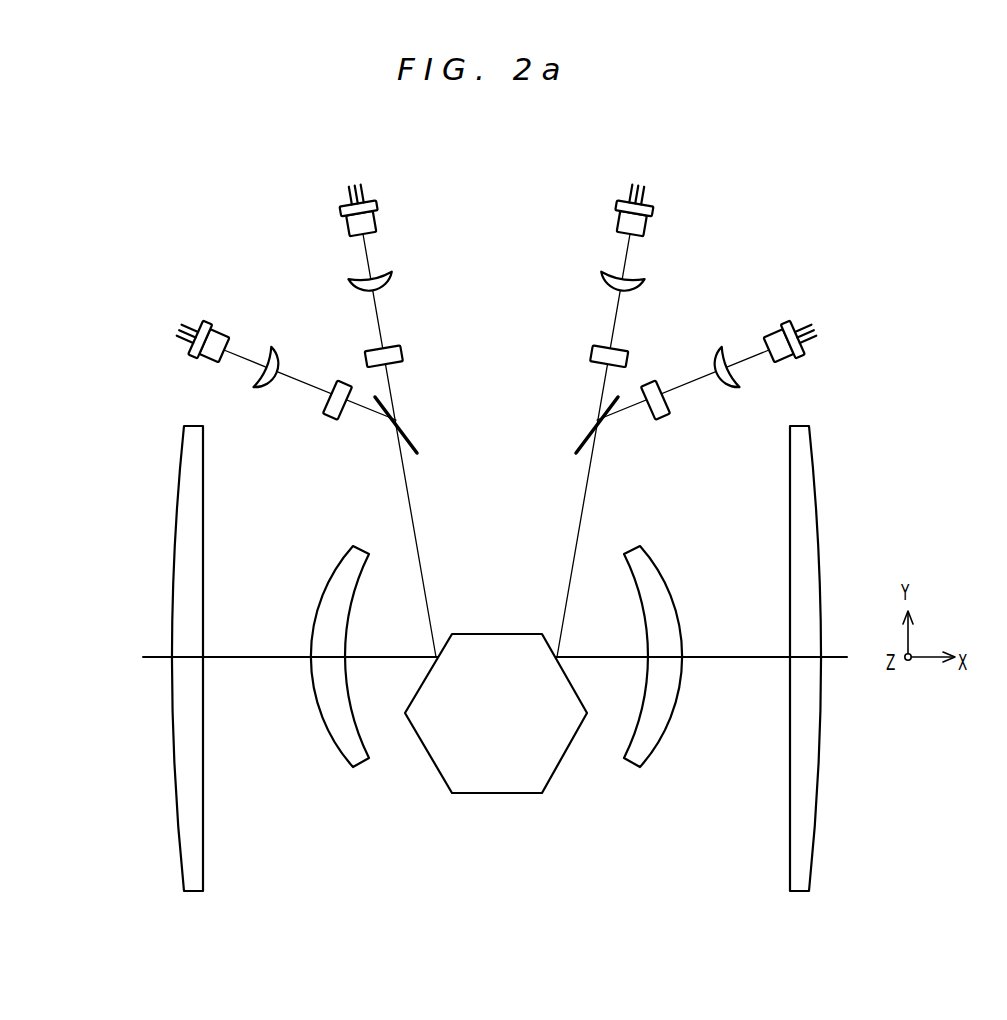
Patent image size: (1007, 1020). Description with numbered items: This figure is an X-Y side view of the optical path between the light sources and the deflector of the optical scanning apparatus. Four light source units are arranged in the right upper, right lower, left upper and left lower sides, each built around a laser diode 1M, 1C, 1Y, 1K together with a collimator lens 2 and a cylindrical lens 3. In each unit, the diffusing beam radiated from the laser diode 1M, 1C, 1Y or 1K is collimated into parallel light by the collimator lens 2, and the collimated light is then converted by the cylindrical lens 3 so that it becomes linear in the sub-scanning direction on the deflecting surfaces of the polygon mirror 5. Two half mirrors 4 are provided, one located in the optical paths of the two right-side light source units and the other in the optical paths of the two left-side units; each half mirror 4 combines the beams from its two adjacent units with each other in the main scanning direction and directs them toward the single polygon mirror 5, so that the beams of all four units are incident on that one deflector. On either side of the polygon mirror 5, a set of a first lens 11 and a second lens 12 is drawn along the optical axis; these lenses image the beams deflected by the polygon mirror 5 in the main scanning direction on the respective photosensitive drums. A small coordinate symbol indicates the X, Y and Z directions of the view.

The laser diode 1M is at (378, 224).
The laser diode 1C is at (617, 222).
The laser diode 1Y is at (218, 335).
The laser diode 1K is at (773, 337).
The collimator lens 2 is at (383, 288).
The cylindrical lens 3 is at (395, 367).
The half mirror 4 is at (410, 437).
The polygon mirror 5 is at (428, 757).
The first lens 11 is at (332, 581).
The second lens 12 is at (204, 499).